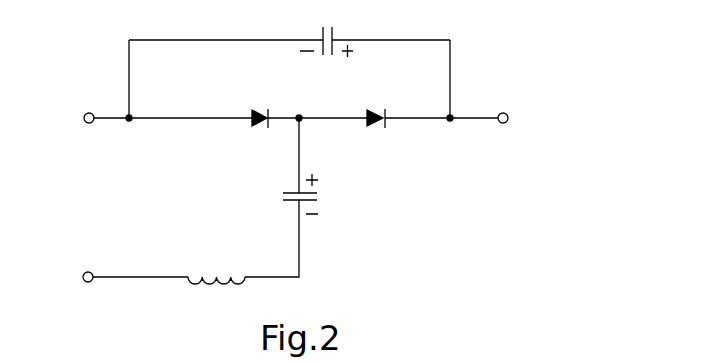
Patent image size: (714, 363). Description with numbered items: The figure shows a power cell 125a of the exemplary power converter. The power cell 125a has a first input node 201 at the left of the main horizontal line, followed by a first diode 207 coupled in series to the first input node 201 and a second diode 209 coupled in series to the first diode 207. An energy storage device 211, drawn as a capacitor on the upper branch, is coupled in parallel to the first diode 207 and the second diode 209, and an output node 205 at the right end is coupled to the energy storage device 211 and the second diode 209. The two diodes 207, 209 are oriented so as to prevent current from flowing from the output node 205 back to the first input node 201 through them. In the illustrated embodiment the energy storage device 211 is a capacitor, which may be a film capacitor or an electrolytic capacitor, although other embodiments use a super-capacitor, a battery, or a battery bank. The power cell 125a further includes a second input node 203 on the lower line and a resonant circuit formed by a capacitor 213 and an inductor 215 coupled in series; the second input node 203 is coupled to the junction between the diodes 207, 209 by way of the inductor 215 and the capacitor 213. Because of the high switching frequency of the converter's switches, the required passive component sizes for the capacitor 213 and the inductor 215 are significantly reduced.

The power cell 125a is at (153, 310).
The first input node 201 is at (84, 118).
The second input node 203 is at (83, 277).
The output node 205 is at (508, 118).
The first diode 207 is at (262, 128).
The second diode 209 is at (375, 128).
The energy storage device 211 is at (335, 30).
The capacitor 213 is at (290, 203).
The inductor 215 is at (229, 286).